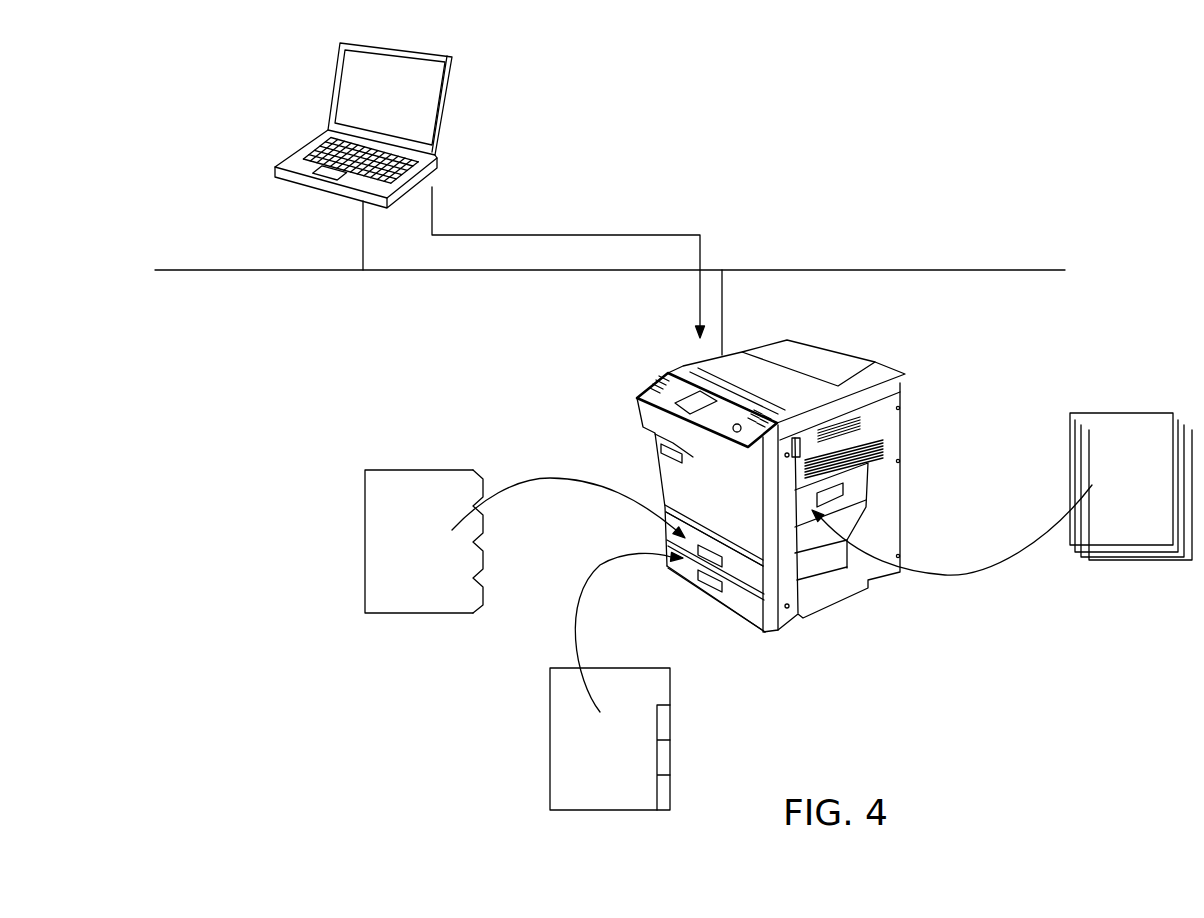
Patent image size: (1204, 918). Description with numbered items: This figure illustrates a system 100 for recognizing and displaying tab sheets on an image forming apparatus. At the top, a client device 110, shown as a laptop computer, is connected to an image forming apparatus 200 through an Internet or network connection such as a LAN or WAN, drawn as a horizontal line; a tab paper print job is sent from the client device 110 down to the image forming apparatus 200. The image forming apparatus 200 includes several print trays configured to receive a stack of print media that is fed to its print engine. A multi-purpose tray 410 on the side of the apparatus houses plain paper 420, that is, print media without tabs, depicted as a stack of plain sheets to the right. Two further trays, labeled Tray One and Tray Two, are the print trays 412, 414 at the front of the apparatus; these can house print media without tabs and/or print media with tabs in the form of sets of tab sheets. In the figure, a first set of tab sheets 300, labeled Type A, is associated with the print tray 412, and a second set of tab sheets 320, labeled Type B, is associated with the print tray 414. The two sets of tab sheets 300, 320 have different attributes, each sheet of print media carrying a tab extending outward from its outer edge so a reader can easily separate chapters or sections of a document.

The system 100 is at (1065, 206).
The client device 110 is at (312, 185).
The image forming apparatus 200 is at (772, 526).
The set of tab sheets 300 is at (371, 456).
The set of tab sheets 320 is at (660, 653).
The multi-purpose tray 410 is at (982, 573).
The print tray 412 is at (567, 480).
The print tray 414 is at (598, 585).
The plain paper 420 is at (1112, 425).